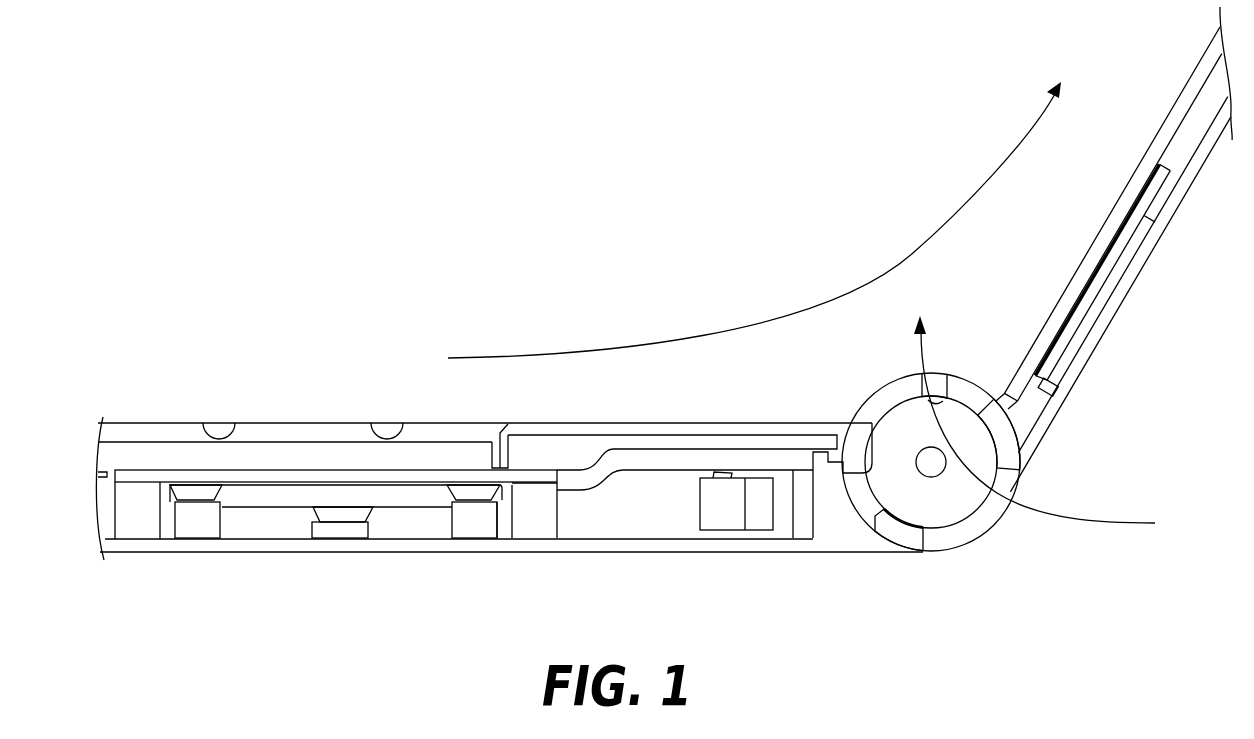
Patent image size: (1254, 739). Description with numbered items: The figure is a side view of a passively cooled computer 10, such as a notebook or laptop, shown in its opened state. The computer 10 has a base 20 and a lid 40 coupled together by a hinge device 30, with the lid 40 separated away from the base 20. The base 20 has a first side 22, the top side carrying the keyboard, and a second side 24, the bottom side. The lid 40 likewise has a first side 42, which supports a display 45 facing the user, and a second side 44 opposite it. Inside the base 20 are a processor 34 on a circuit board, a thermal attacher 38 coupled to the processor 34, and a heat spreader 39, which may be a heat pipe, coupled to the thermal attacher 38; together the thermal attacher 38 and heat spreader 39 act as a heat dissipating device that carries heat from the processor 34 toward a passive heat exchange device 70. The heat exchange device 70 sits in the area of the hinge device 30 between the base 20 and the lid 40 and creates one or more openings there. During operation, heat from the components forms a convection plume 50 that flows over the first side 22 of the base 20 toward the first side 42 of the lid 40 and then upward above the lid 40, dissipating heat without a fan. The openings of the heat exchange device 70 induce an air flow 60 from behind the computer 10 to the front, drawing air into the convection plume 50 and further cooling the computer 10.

The passively cooled computer 10 is at (670, 134).
The base 20 is at (284, 376).
The first side 22 is at (500, 430).
The second side 24 is at (477, 553).
The hinge device 30 is at (903, 540).
The processor 34 is at (267, 497).
The thermal attacher 38 is at (132, 478).
The heat spreader 39 is at (635, 455).
The lid 40 is at (1118, 145).
The first side 42 is at (1106, 220).
The second side 44 is at (1148, 268).
The display 45 is at (1165, 117).
The convection plume 50 is at (700, 340).
The air flow 60 is at (947, 372).
The passive heat exchange device 70 is at (962, 510).